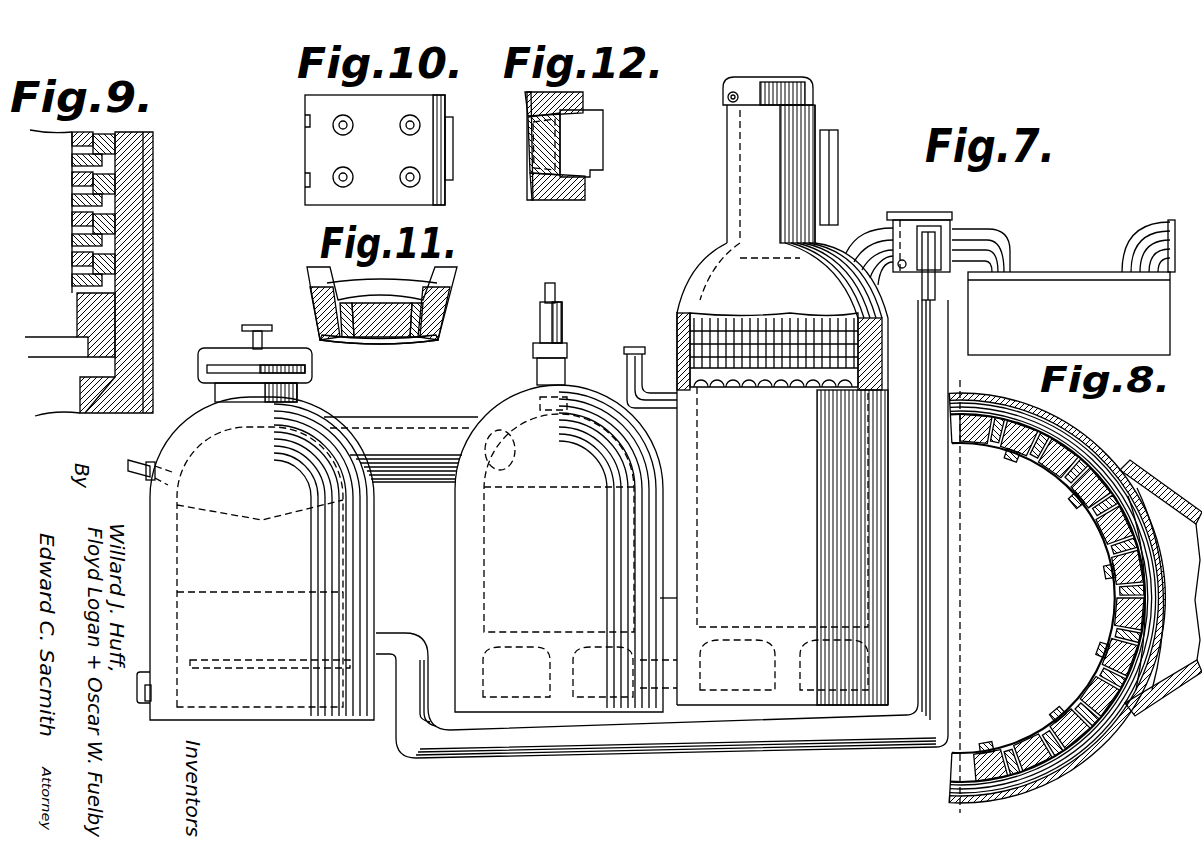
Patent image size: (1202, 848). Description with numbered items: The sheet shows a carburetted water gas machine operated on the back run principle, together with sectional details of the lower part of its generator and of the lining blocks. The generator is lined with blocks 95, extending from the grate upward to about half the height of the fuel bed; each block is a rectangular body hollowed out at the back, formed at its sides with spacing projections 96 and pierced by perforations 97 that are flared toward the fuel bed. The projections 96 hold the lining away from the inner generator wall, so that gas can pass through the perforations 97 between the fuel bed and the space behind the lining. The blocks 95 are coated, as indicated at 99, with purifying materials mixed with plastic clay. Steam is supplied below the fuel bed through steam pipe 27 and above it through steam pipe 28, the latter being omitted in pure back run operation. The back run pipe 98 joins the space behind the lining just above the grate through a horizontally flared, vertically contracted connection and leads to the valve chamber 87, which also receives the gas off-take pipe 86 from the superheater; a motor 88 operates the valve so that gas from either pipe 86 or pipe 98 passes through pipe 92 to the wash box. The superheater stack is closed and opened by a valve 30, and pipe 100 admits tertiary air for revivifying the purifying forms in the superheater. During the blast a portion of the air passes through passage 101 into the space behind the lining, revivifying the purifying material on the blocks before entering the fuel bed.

In FIG. 7, the steam pipe 27 is at (143, 672).
In FIG. 7, the steam pipe 28 is at (134, 462).
In FIG. 7, the valve 30 is at (805, 87).
In FIG. 7, the gas off-take pipe 86 is at (870, 232).
In FIG. 7, the valve chamber 87 is at (948, 222).
In FIG. 7, the motor 88 is at (936, 280).
In FIG. 7, the pipe 92 is at (1000, 240).
In FIG. 9, the blocks 95 is at (74, 277).
In FIG. 10, the blocks 95 is at (303, 201).
In FIG. 12, the blocks 95 is at (532, 192).
In FIG. 11, the blocks 95 is at (432, 313).
In FIG. 8, the blocks 95 is at (1014, 462).
In FIG. 9, the spacing projections 96 is at (112, 236).
In FIG. 10, the spacing projections 96 is at (451, 153).
In FIG. 12, the spacing projections 96 is at (600, 133).
In FIG. 11, the spacing projections 96 is at (308, 276).
In FIG. 8, the spacing projections 96 is at (1118, 566).
In FIG. 9, the perforations 97 is at (74, 150).
In FIG. 10, the perforations 97 is at (412, 127).
In FIG. 12, the perforations 97 is at (531, 130).
In FIG. 11, the perforations 97 is at (415, 336).
In FIG. 8, the perforations 97 is at (1078, 474).
In FIG. 7, the back run pipe 98 is at (619, 735).
In FIG. 8, the back run pipe 98 is at (1160, 490).
In FIG. 12, the purifying material coating 99 is at (560, 200).
In FIG. 11, the purifying material coating 99 is at (442, 334).
In FIG. 7, the pipe 100 is at (628, 368).
In FIG. 9, the passage 101 is at (116, 333).